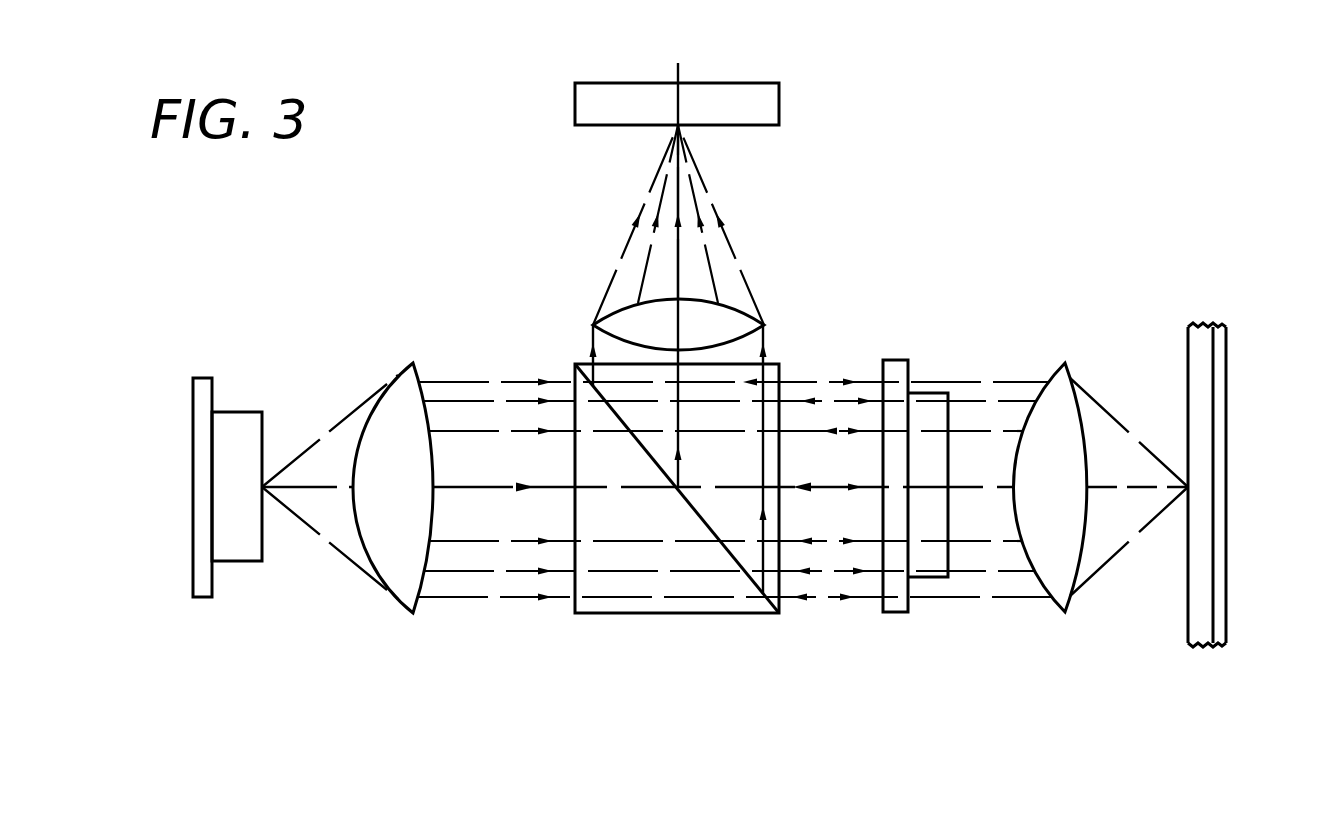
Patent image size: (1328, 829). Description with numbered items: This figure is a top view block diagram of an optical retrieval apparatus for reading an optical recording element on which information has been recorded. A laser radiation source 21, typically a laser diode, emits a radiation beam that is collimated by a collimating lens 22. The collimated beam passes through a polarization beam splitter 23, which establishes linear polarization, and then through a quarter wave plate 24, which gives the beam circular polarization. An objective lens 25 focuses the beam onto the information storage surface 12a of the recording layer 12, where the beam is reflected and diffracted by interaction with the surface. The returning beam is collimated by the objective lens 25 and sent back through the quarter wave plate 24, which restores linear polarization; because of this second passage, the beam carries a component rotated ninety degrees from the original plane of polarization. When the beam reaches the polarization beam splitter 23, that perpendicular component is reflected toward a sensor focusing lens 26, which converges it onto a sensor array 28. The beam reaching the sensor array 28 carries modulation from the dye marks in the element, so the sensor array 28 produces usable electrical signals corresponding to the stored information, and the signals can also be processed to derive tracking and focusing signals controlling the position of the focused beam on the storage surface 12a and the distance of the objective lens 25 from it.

The recording layer 12 is at (1226, 361).
The information storage surface 12a is at (1213, 600).
The laser radiation source 21 is at (240, 561).
The collimating lens 22 is at (406, 608).
The polarization beam splitter 23 is at (662, 613).
The quarter wave plate 24 is at (897, 612).
The objective lens 25 is at (1068, 610).
The sensor focusing lens 26 is at (742, 310).
The sensor array 28 is at (762, 83).